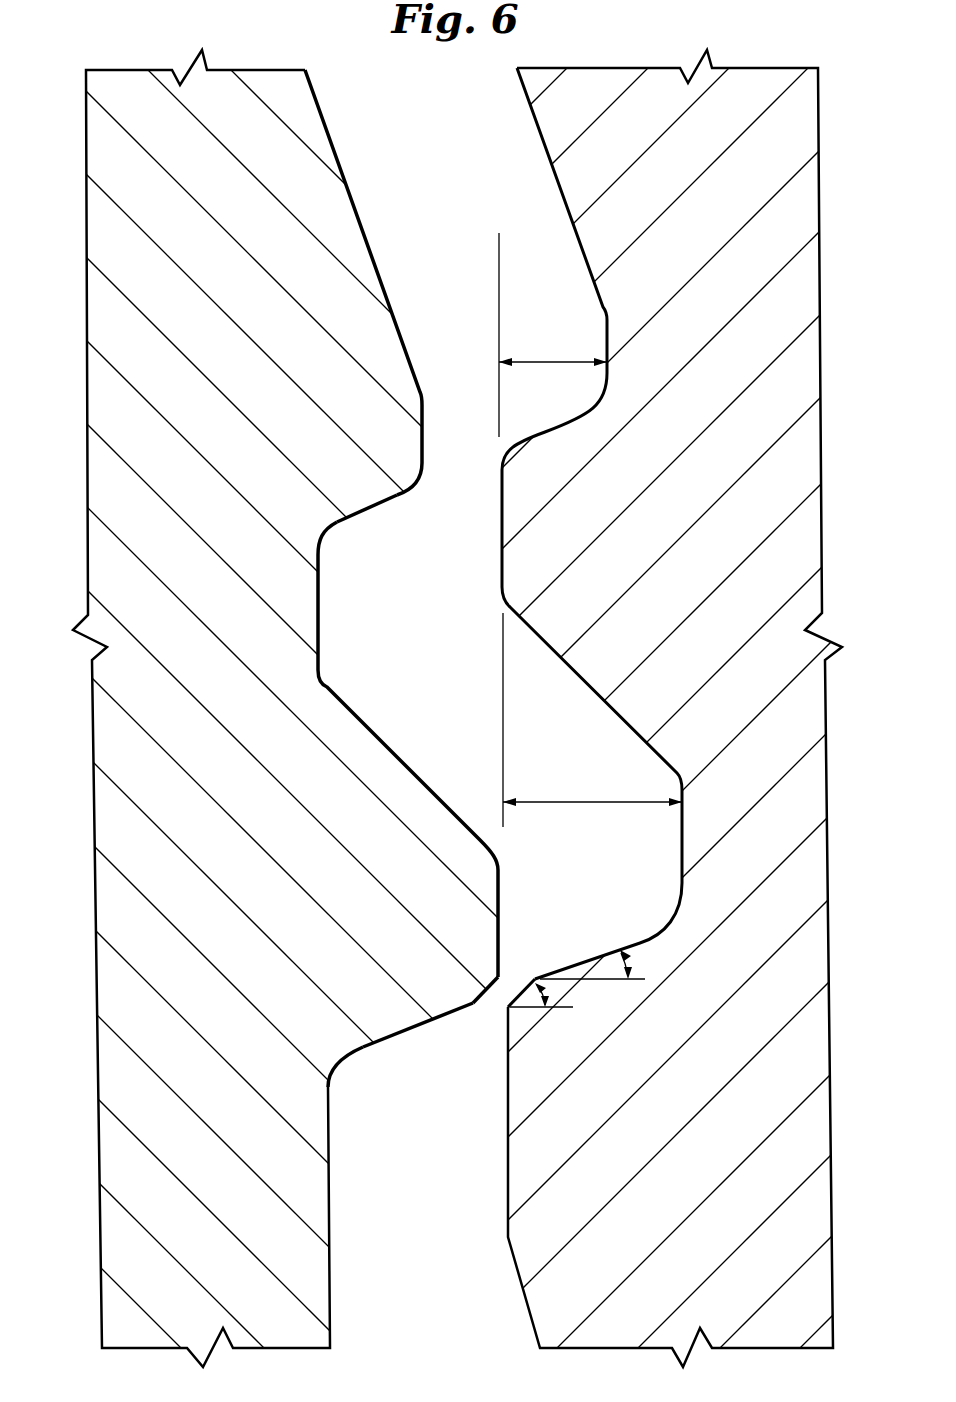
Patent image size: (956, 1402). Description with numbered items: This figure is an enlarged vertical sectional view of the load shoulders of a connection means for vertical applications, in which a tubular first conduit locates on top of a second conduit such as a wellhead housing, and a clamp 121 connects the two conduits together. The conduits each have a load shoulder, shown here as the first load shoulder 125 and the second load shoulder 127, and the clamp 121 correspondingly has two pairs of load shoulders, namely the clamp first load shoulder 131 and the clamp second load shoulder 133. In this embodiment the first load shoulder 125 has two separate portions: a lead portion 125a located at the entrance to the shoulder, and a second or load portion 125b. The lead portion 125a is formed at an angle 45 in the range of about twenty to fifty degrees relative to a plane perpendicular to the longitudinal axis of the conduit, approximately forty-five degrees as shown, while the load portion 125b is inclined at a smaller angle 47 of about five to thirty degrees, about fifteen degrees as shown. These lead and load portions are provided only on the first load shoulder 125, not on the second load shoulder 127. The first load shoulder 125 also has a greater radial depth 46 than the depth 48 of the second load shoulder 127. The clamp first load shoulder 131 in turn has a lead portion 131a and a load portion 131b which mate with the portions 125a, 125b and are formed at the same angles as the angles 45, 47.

The clamp 121 is at (290, 701).
The clamp second load shoulder 133 is at (362, 520).
The clamp first load shoulder 131 is at (413, 1061).
The lead portion of clamp first load shoulder 131a is at (484, 1000).
The load portion of clamp first load shoulder 131b is at (386, 1050).
The second load shoulder 127 is at (543, 437).
The first load shoulder 125 is at (595, 918).
The lead portion 125a is at (527, 993).
The load portion 125b is at (624, 942).
The depth 48 is at (553, 362).
The radial depth 46 is at (596, 800).
The angle 47 is at (632, 961).
The angle 45 is at (547, 991).